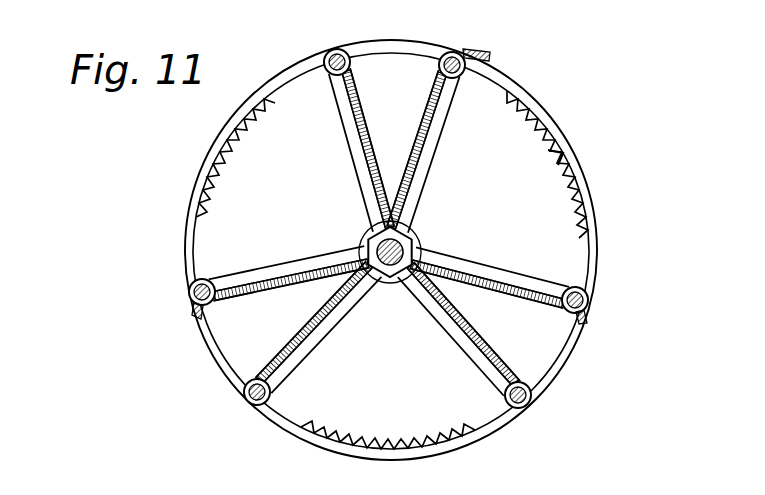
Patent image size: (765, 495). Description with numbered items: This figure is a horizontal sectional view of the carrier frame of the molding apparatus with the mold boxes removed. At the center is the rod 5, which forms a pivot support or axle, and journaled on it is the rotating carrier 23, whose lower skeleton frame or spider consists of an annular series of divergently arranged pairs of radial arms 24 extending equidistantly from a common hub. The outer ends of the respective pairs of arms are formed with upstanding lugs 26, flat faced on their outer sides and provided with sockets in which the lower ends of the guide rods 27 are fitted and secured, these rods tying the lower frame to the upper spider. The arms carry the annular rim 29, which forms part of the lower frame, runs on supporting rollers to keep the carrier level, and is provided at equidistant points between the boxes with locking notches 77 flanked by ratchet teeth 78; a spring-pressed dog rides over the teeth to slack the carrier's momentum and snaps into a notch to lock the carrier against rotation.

The rod 5 is at (404, 244).
The rotating carrier 23 is at (421, 130).
The radial arms 24 is at (391, 286).
The upstanding lugs 26 is at (452, 52).
The guide rods 27 is at (336, 49).
The annular rim 29 is at (597, 263).
The locking notches 77 is at (555, 166).
The ratchet teeth 78 is at (526, 122).